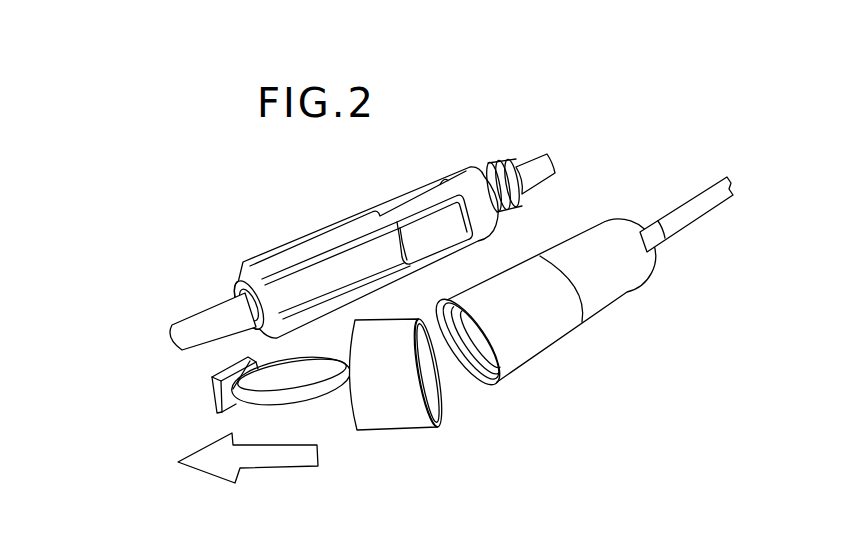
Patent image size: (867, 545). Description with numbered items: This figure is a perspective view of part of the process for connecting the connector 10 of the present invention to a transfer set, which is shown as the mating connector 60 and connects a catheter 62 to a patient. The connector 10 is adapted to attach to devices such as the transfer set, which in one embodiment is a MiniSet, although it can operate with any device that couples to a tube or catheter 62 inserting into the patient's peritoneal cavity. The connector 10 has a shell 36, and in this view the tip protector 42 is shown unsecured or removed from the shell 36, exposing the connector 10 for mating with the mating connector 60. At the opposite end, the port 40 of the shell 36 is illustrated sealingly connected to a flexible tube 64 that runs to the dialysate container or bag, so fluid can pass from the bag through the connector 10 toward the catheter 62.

The connector 10 is at (435, 295).
The shell 36 is at (509, 378).
The port 40 is at (650, 232).
The tip protector 42 is at (395, 433).
The mating connector 60 is at (330, 206).
The catheter 62 is at (206, 305).
The flexible tube 64 is at (690, 197).